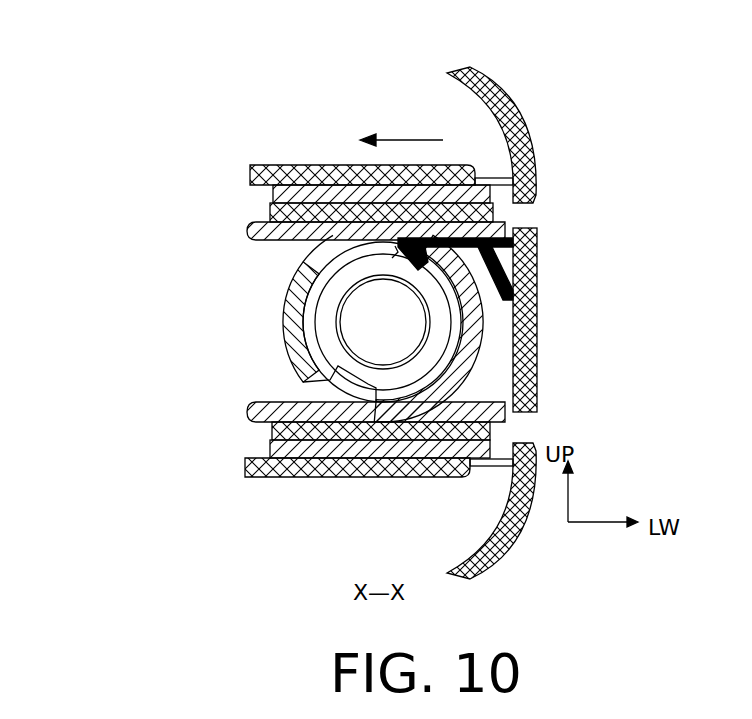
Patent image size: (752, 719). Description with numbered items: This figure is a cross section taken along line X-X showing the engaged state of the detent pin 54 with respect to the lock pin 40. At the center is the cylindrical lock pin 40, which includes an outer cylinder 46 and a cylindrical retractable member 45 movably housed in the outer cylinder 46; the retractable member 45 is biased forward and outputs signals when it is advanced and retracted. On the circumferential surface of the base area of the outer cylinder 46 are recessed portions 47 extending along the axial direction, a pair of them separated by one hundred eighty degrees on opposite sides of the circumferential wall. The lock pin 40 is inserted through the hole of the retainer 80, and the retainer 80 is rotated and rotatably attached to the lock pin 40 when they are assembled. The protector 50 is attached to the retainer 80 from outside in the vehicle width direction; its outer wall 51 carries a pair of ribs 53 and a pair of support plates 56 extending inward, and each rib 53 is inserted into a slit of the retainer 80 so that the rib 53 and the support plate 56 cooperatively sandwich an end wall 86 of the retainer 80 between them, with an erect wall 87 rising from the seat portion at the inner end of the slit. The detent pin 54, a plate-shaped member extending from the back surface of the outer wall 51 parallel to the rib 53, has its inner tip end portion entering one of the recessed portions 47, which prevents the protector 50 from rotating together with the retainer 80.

The lock pin 40 is at (368, 412).
The retractable member 45 is at (383, 328).
The outer cylinder 46 is at (320, 300).
The recessed portion 47 is at (395, 250).
The protector 50 is at (513, 117).
The outer wall 51 is at (537, 303).
The rib 53 is at (267, 212).
The detent pin 54 is at (537, 243).
The support plate 56 is at (323, 167).
The retainer 80 is at (292, 328).
The end wall 86 is at (250, 177).
The erect wall 87 is at (265, 232).